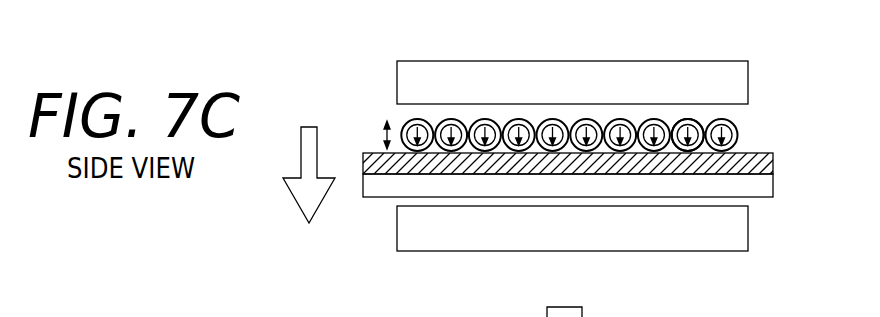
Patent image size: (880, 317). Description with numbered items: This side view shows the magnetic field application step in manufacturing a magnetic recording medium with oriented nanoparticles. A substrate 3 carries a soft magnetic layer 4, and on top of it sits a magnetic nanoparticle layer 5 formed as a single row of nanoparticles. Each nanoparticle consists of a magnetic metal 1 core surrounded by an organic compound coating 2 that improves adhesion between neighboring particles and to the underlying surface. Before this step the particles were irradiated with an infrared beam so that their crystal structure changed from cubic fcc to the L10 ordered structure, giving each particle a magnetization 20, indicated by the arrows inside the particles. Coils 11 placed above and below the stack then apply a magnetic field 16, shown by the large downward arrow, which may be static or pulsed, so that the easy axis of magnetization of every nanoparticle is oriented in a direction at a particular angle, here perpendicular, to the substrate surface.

The magnetic metal 1 is at (738, 132).
The organic compound coating 2 is at (741, 142).
The substrate 3 is at (773, 189).
The soft magnetic layer 4 is at (773, 163).
The magnetic nanoparticle layer 5 is at (384, 136).
The coils 11 is at (622, 68).
The magnetic field 16 is at (307, 127).
The magnetization 20 is at (700, 123).